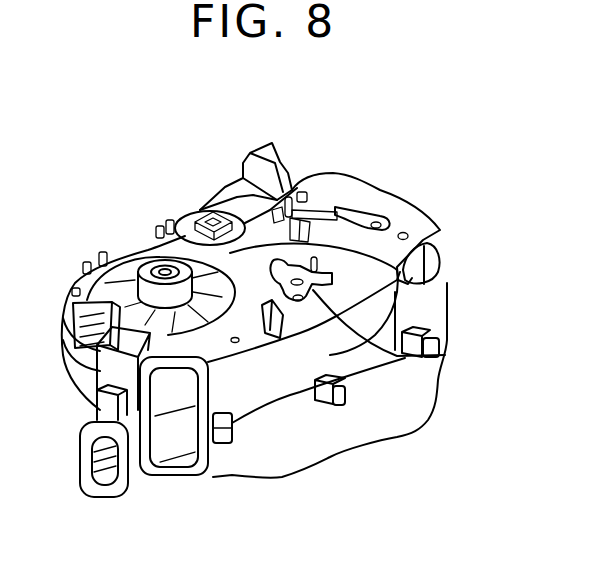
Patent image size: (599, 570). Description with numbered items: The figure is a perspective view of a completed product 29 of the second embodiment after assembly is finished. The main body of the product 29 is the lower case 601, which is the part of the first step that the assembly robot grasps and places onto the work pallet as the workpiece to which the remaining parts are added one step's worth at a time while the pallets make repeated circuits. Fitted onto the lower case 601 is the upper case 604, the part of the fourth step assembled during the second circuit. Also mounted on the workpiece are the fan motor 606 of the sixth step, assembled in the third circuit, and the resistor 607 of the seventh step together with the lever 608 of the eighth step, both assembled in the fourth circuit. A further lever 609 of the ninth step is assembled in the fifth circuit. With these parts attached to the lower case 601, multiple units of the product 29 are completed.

The product 29 is at (199, 141).
The lower case 601 is at (313, 430).
The upper case 604 is at (330, 195).
The fan motor 606 is at (118, 283).
The resistor 607 is at (196, 223).
The lever 608 is at (363, 212).
The lever 609 is at (418, 358).